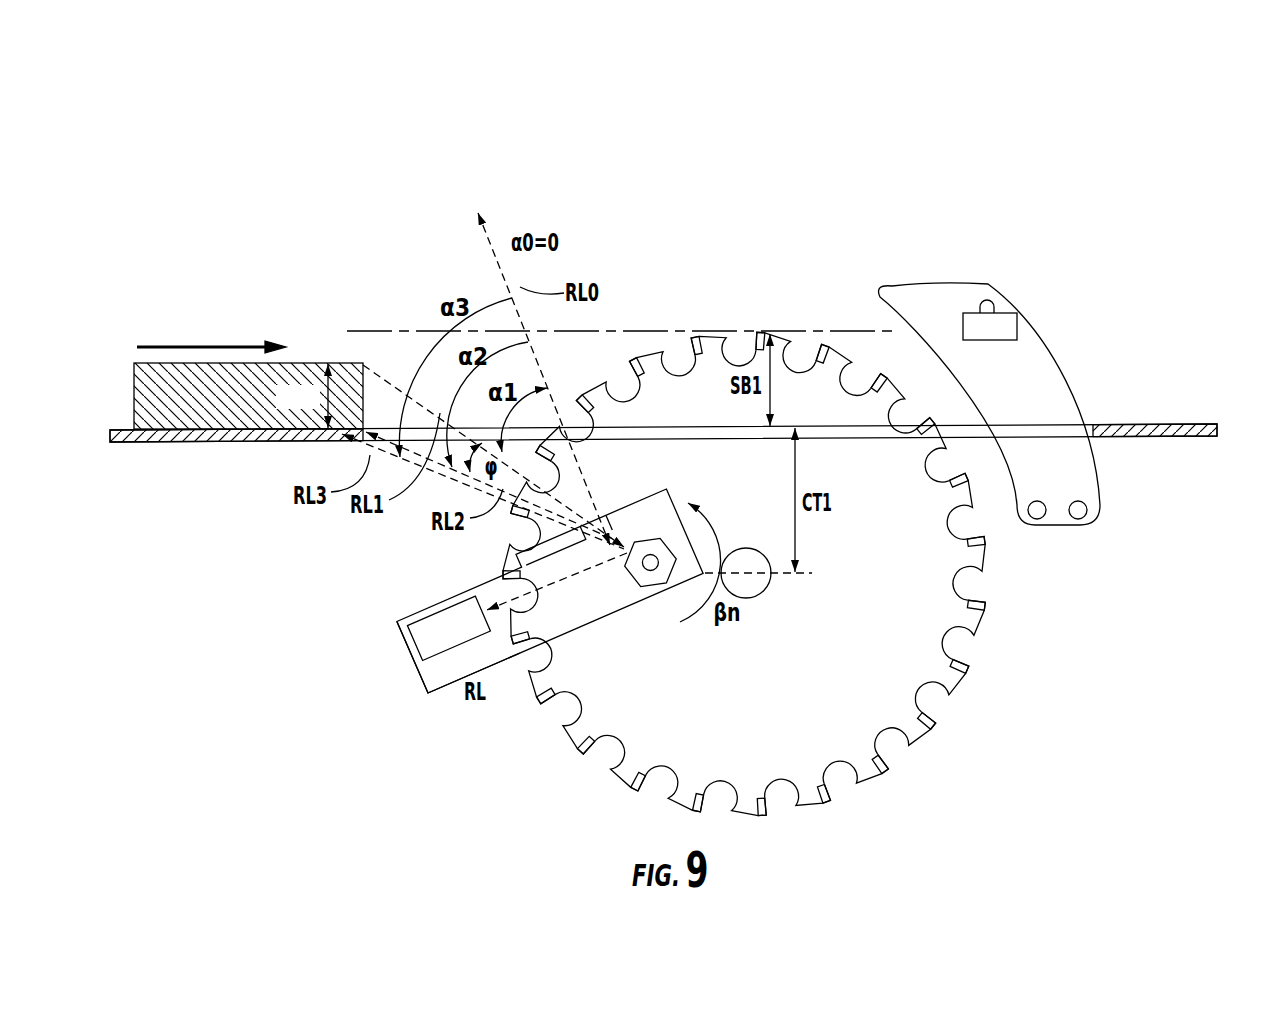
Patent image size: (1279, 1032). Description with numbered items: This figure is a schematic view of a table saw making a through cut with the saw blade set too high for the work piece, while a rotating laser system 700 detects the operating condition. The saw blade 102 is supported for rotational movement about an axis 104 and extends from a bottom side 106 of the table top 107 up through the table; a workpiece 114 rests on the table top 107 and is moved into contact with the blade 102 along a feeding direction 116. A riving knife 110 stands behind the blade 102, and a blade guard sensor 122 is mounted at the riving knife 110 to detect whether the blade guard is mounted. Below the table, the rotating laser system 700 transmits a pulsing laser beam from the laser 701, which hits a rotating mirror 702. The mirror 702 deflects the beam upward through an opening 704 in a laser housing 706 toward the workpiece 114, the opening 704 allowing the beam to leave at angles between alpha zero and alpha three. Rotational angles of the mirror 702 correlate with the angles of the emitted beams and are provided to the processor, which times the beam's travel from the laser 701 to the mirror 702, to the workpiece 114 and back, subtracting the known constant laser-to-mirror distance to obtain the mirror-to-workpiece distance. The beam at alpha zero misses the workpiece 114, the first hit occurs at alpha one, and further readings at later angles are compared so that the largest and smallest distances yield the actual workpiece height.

The saw blade 102 is at (588, 735).
The axis 104 is at (764, 592).
The bottom side 106 is at (125, 448).
The table top 107 is at (1170, 425).
The riving knife 110 is at (1072, 483).
The workpiece 114 is at (134, 362).
The feeding direction 116 is at (235, 344).
The blade guard sensor 122 is at (1007, 318).
The rotating laser system 700 is at (403, 588).
The laser 701 is at (435, 634).
The rotating mirror 702 is at (655, 590).
The opening 704 is at (593, 503).
The laser housing 706 is at (425, 682).